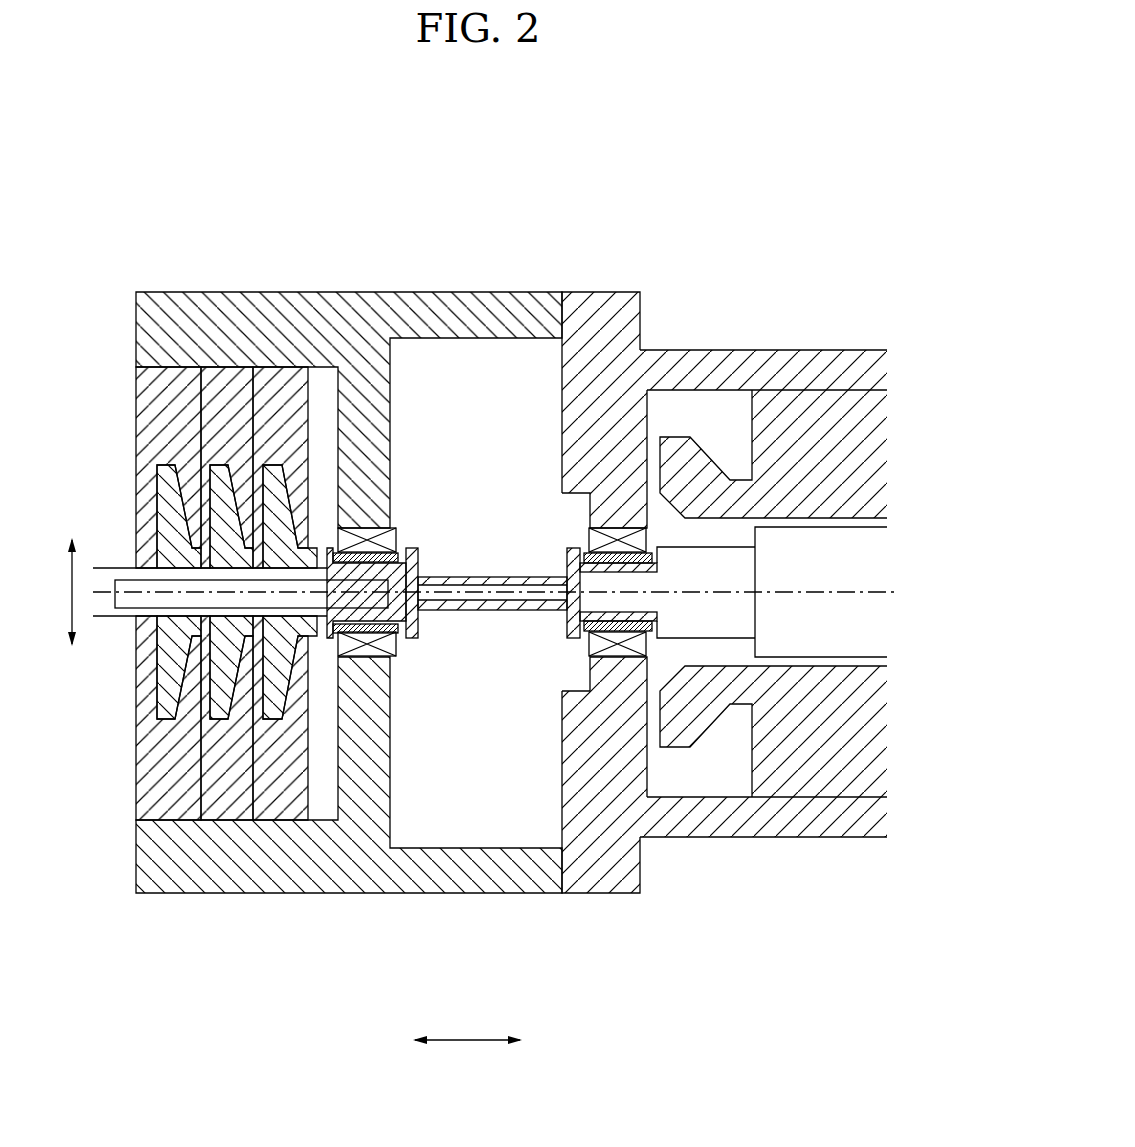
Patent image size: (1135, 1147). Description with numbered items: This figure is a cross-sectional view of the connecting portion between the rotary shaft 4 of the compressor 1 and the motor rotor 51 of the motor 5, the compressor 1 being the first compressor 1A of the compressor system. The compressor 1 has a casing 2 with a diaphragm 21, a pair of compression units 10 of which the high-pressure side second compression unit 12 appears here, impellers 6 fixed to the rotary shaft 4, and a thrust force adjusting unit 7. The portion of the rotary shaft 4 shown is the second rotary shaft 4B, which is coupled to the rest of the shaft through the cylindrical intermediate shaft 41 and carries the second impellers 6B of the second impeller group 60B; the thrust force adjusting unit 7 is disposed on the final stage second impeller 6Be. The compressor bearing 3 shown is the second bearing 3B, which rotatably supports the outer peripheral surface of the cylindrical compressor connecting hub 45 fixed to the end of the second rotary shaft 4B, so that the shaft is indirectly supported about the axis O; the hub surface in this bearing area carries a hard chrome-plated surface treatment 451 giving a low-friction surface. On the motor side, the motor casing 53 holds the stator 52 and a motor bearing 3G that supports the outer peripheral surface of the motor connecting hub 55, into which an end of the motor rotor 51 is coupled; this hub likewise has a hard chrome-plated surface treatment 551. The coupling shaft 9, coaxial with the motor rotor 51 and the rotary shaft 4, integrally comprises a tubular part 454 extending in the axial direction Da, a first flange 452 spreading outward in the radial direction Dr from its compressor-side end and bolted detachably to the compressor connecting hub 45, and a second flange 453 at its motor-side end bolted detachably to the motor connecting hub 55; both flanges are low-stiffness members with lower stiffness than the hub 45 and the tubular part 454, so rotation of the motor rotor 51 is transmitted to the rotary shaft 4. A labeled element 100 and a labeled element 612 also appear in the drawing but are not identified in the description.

The first compressor 1A is at (349, 323).
The compressor 1 is at (349, 323).
The casing 2 is at (198, 276).
The compressor bearing 3 is at (349, 774).
The second bearing 3B is at (406, 668).
The motor bearing 3G is at (577, 652).
The rotary shaft 4 is at (166, 736).
The second rotary shaft 4B is at (189, 702).
The motor 5 is at (793, 336).
The impeller 6 is at (186, 789).
The second impeller 6B is at (186, 789).
The final stage second impeller 6Be is at (172, 465).
The thrust force adjusting unit 7 is at (180, 608).
The coupling shaft 9 is at (504, 563).
The compression unit 10 is at (229, 449).
The second compression unit 12 is at (237, 381).
The diaphragm 21 is at (205, 367).
The intermediate shaft 41 is at (110, 568).
The compressor connecting hub 45 is at (409, 534).
The motor rotor 51 is at (860, 532).
The stator 52 is at (853, 422).
The motor casing 53 is at (850, 350).
The motor connecting hub 55 is at (572, 534).
The second impeller group 60B is at (145, 785).
The housing cover 100 is at (579, 254).
The hard chrome-plated surface treatment 451 is at (380, 657).
The first flange 452 is at (572, 640).
The second flange 453 is at (422, 612).
The tubular part 454 is at (478, 611).
The hard chrome-plated surface treatment 551 is at (618, 657).
The rotor core shaft 612 is at (206, 646).
The axis O is at (858, 592).
The radial direction Dr is at (59, 592).
The axial direction Da is at (467, 1026).